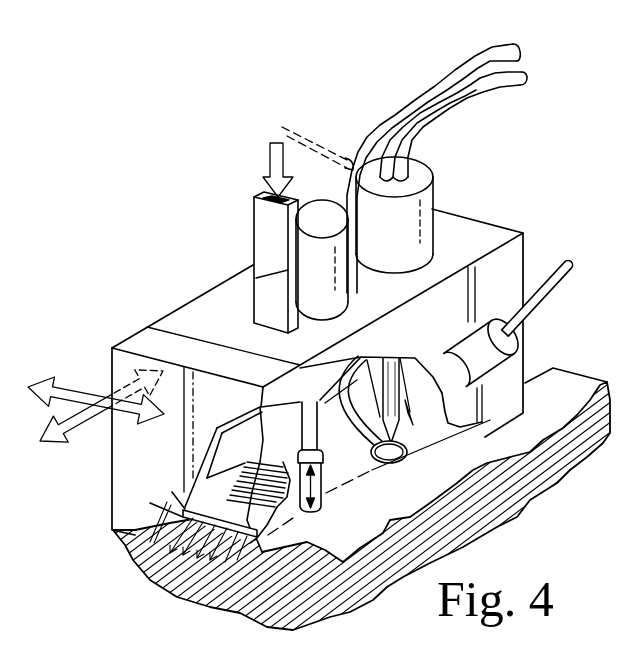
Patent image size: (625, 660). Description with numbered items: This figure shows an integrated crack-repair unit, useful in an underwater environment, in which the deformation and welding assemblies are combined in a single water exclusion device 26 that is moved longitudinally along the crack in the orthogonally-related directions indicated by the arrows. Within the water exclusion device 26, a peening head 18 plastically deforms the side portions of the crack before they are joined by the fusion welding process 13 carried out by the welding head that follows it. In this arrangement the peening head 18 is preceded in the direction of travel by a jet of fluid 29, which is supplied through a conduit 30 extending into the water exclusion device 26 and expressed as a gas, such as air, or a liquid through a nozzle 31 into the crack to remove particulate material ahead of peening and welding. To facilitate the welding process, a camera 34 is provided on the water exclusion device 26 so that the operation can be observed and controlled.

The fusion welding process 13 is at (432, 462).
The peening head 18 is at (321, 490).
The water exclusion device 26 is at (188, 314).
The jet of fluid 29 is at (182, 593).
The conduit 30 is at (275, 241).
The nozzle 31 is at (172, 492).
The camera 34 is at (523, 355).